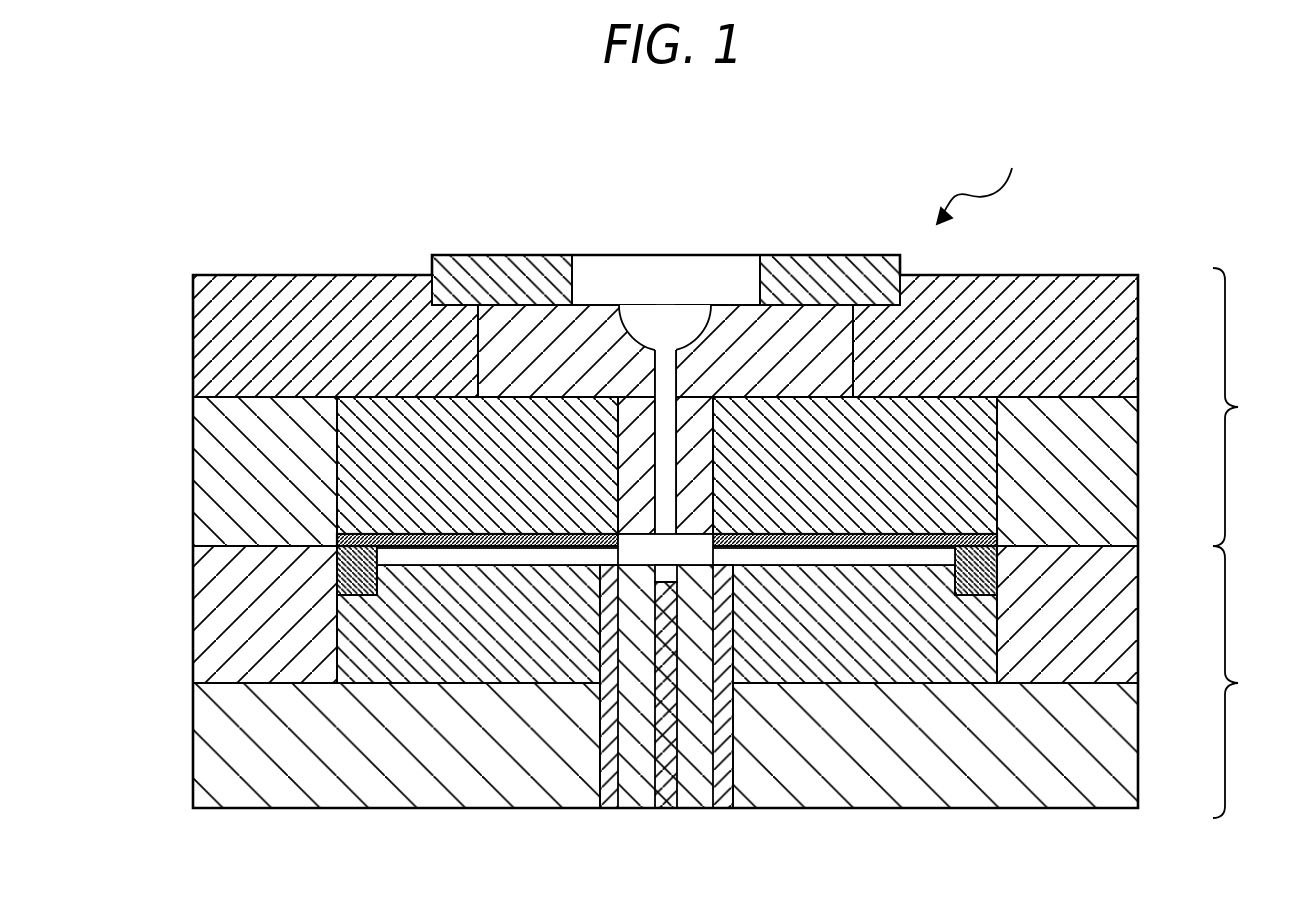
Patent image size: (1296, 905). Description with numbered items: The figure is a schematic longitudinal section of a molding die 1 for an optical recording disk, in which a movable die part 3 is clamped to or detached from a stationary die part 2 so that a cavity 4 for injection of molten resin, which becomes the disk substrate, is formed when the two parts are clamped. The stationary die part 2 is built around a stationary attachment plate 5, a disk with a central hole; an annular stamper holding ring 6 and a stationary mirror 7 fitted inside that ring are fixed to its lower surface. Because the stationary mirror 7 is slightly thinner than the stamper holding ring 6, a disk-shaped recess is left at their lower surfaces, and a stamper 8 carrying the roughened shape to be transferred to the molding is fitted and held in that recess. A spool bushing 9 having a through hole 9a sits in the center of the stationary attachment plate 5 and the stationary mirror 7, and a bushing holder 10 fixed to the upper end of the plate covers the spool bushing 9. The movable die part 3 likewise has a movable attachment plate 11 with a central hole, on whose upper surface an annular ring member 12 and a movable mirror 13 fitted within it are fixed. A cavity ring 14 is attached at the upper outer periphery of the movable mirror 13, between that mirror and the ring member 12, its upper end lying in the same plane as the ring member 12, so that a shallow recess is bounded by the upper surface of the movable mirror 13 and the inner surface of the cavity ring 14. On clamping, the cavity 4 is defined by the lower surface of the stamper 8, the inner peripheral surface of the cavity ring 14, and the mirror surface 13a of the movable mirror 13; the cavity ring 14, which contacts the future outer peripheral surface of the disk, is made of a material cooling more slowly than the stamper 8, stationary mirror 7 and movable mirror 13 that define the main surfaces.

The molding die 1 is at (1003, 160).
The stationary die part 2 is at (1236, 407).
The movable die part 3 is at (1236, 682).
The cavity 4 is at (866, 560).
The stationary attachment plate 5 is at (292, 317).
The stamper holding ring 6 is at (1115, 472).
The stationary mirror 7 is at (957, 428).
The stamper 8 is at (410, 540).
The spool bushing 9 is at (811, 320).
The through hole 9a is at (670, 358).
The bushing holder 10 is at (524, 290).
The movable attachment plate 11 is at (1082, 770).
The ring member 12 is at (247, 655).
The movable mirror 13 is at (805, 667).
The mirror surface 13a is at (522, 557).
The cavity ring 14 is at (360, 585).